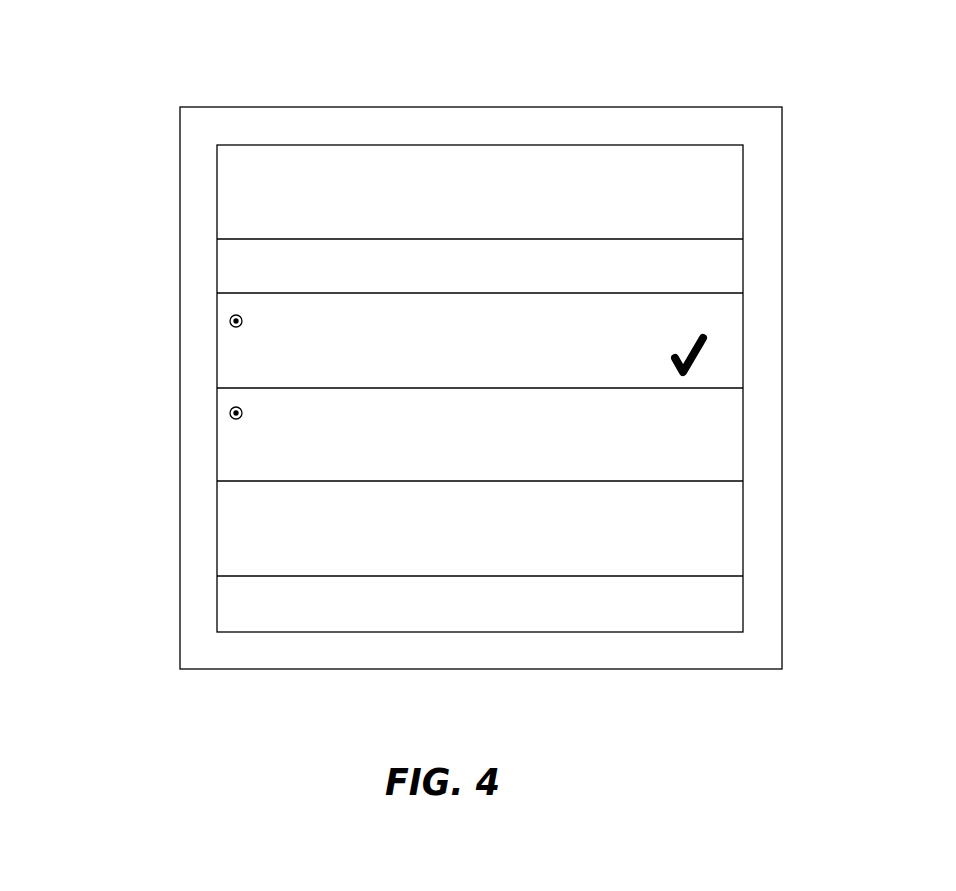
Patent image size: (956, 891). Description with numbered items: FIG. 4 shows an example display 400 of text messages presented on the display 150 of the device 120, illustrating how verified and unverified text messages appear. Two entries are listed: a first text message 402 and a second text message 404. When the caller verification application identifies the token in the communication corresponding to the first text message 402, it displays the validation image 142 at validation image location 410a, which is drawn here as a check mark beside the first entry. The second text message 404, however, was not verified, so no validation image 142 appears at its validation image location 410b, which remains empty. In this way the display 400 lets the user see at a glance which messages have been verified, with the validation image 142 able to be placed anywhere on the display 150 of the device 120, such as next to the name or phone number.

The display 400 is at (141, 90).
The device 120 is at (706, 107).
The display 150 is at (765, 530).
The first text message 402 is at (217, 344).
The second text message 404 is at (217, 436).
The validation image 142 is at (703, 353).
The validation image location 410a is at (703, 375).
The validation image location 410b is at (703, 460).